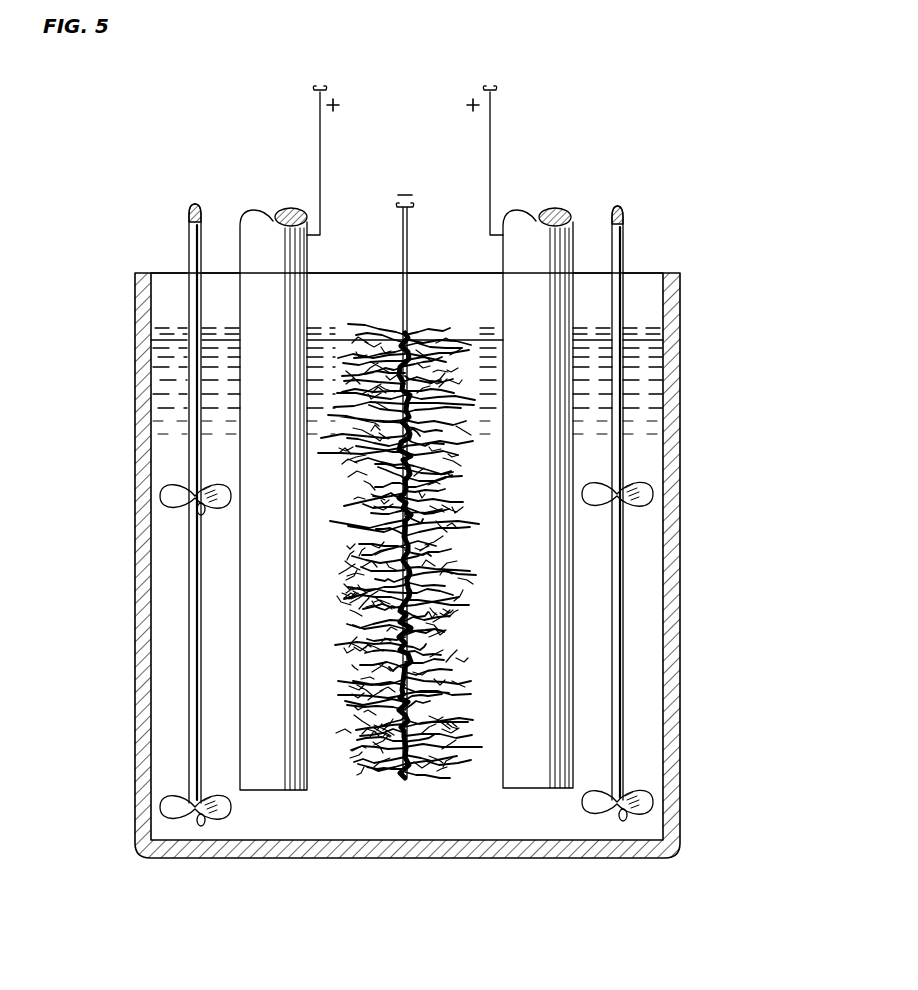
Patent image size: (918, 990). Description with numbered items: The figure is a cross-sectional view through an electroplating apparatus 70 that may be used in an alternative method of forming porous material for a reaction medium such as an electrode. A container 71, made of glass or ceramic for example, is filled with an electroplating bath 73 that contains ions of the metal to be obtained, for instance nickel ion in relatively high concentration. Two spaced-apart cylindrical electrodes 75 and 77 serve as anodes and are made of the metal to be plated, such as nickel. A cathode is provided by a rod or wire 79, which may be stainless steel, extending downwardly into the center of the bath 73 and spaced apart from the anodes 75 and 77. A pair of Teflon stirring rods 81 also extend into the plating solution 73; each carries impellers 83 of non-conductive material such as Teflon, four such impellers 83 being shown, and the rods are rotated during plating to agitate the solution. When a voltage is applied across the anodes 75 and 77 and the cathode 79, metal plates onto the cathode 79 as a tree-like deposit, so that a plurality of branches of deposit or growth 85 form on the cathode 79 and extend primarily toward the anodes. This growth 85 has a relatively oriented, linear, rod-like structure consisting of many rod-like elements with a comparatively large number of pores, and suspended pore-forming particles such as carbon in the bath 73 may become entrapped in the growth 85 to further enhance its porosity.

The electroplating apparatus 70 is at (176, 146).
The container 71 is at (135, 641).
The electroplating bath 73 is at (170, 388).
The cylindrical electrode 75 is at (308, 248).
The cylindrical electrode 77 is at (503, 257).
The cathode rod or wire 79 is at (412, 214).
The stirring rod 81 is at (188, 236).
The impeller 83 is at (215, 506).
The deposit or growth 85 is at (425, 775).